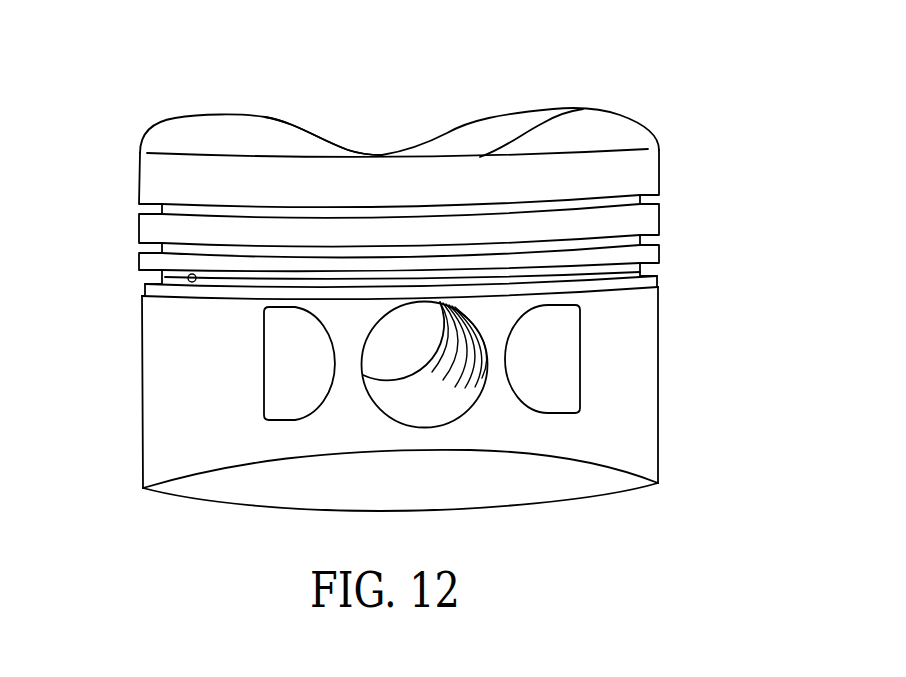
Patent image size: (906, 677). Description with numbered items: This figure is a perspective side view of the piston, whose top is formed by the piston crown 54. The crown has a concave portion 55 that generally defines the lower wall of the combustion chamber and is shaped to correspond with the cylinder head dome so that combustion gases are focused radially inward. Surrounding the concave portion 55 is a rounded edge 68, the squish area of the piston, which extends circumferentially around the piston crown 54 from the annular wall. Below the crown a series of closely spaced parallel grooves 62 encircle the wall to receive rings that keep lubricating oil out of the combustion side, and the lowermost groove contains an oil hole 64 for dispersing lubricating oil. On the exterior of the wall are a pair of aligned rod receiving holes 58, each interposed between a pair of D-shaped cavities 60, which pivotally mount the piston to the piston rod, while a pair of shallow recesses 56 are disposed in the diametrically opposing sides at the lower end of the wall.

The piston crown 54 is at (653, 130).
The concave portion 55 is at (323, 143).
The rounded edge 68 is at (583, 108).
The parallel grooves 62 is at (647, 200).
The oil hole 64 is at (190, 282).
The D-shaped cavities 60 is at (275, 388).
The rod receiving holes 58 is at (452, 402).
The shallow recesses 56 is at (228, 492).